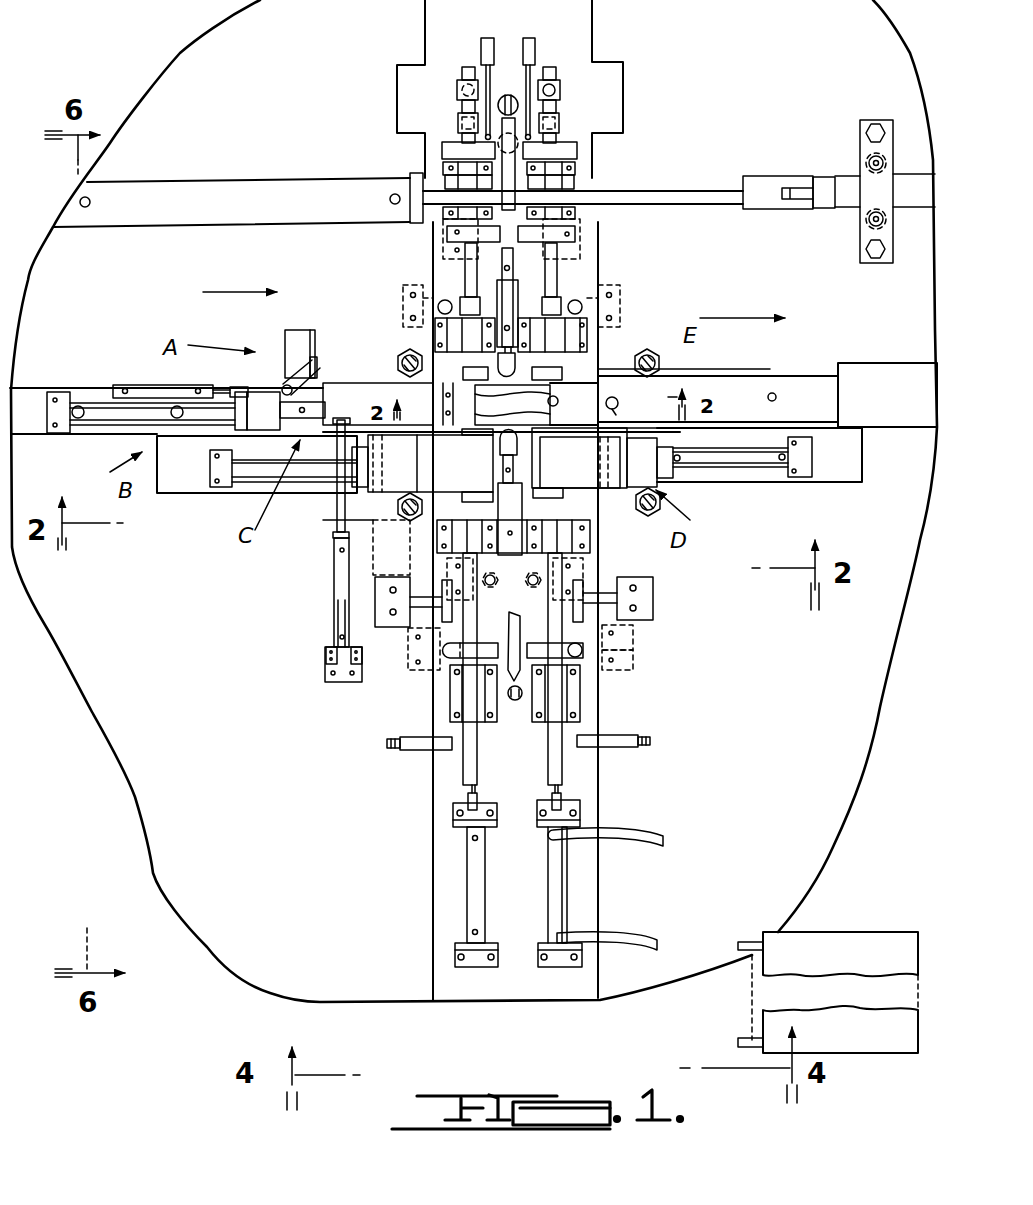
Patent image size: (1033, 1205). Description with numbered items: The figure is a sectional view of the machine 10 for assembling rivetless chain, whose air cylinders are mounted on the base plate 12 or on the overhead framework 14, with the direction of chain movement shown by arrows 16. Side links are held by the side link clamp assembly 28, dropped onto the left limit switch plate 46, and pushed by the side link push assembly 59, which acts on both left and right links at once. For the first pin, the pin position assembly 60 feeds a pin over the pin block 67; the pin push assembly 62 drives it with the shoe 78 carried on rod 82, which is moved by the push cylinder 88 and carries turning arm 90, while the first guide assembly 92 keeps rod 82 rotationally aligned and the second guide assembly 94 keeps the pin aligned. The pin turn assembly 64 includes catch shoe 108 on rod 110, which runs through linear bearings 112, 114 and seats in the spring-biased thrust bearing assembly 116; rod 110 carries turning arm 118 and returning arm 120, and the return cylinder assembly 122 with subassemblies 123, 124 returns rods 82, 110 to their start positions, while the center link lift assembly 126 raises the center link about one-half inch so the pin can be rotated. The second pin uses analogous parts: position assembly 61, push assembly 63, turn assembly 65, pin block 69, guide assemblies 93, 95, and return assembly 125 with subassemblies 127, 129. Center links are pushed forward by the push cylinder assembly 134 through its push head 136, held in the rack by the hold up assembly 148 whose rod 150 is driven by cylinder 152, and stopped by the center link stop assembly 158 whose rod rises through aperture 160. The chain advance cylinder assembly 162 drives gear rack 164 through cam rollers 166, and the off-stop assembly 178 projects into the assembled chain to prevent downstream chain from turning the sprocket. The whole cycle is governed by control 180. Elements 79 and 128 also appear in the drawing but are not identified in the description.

The machine for assembling rivetless chain 10 is at (280, 685).
The base plate 12 is at (298, 817).
The overhead framework 14 is at (403, 357).
The arrows 16 is at (232, 292).
The side link clamp assembly 28 is at (512, 292).
The left limit switch plate 46 is at (548, 392).
The side link push assembly 59 is at (133, 384).
The pin 1 position assembly 60 is at (740, 465).
The pin 2 position assembly 61 is at (252, 475).
The pin 1 push assembly 62 is at (566, 884).
The pin 2 push assembly 63 is at (465, 888).
The pin 1 turn assembly 64 is at (537, 642).
The pin 2 turn assembly 65 is at (482, 648).
The pin 1 pin block 67 is at (600, 462).
The pin 2 pin block 69 is at (470, 476).
The shoe 78 is at (462, 128).
The piston rod 79 is at (514, 507).
The rod 82 is at (548, 762).
The pin 1 push cylinder 88 is at (565, 915).
The turning arm 90 is at (578, 656).
The first guide assembly 92 is at (612, 595).
The guide assembly 93 is at (418, 595).
The second guide assembly 94 is at (608, 745).
The pin 2 guide assembly 95 is at (415, 752).
The catch shoe 108 is at (550, 373).
The rod 110 is at (557, 268).
The linear bearing 112 is at (583, 338).
The linear bearing 114 is at (580, 182).
The thrust bearing assembly 116 is at (558, 110).
The turning arm 118 is at (575, 236).
The returning arm 120 is at (560, 298).
The return cylinder assembly 122 is at (626, 636).
The subassembly 123 is at (634, 660).
The subassembly 124 is at (622, 296).
The pin 2 return assembly 125 is at (400, 648).
The center link lift assembly 126 is at (558, 405).
The subassembly 127 is at (412, 672).
The housing 128 is at (190, 413).
The subassembly 129 is at (410, 298).
The push cylinder assembly 134 is at (88, 400).
The push head 136 is at (280, 400).
The center link hold up assembly 148 is at (333, 583).
The rod 150 is at (342, 482).
The cylinder 152 is at (333, 618).
The center link stop assembly 158 is at (618, 400).
The aperture 160 is at (617, 409).
The chain advance cylinder assembly 162 is at (258, 182).
The gear rack 164 is at (848, 178).
The cam rollers 166 is at (862, 138).
The off-stop assembly 178 is at (775, 393).
The control 180 is at (860, 932).